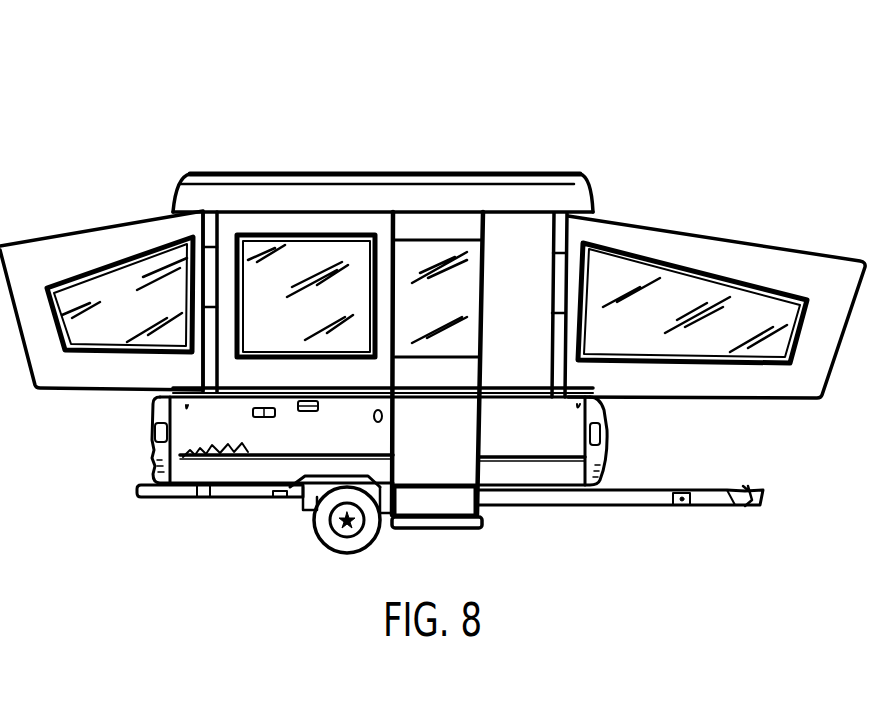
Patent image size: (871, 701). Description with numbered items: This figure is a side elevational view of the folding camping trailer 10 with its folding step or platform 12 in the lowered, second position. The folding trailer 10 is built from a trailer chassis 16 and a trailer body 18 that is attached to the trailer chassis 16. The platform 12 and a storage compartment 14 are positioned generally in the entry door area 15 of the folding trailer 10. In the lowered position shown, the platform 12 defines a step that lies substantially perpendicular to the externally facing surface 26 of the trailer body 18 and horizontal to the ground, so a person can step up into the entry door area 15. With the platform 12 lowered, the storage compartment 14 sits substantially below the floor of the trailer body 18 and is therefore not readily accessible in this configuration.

The folding camping trailer 10 is at (432, 323).
The folding step or platform 12 is at (467, 528).
The storage compartment 14 is at (446, 515).
The entry door area 15 is at (478, 472).
The trailer chassis 16 is at (640, 497).
The trailer body 18 is at (411, 441).
The externally facing surface 26 is at (539, 445).